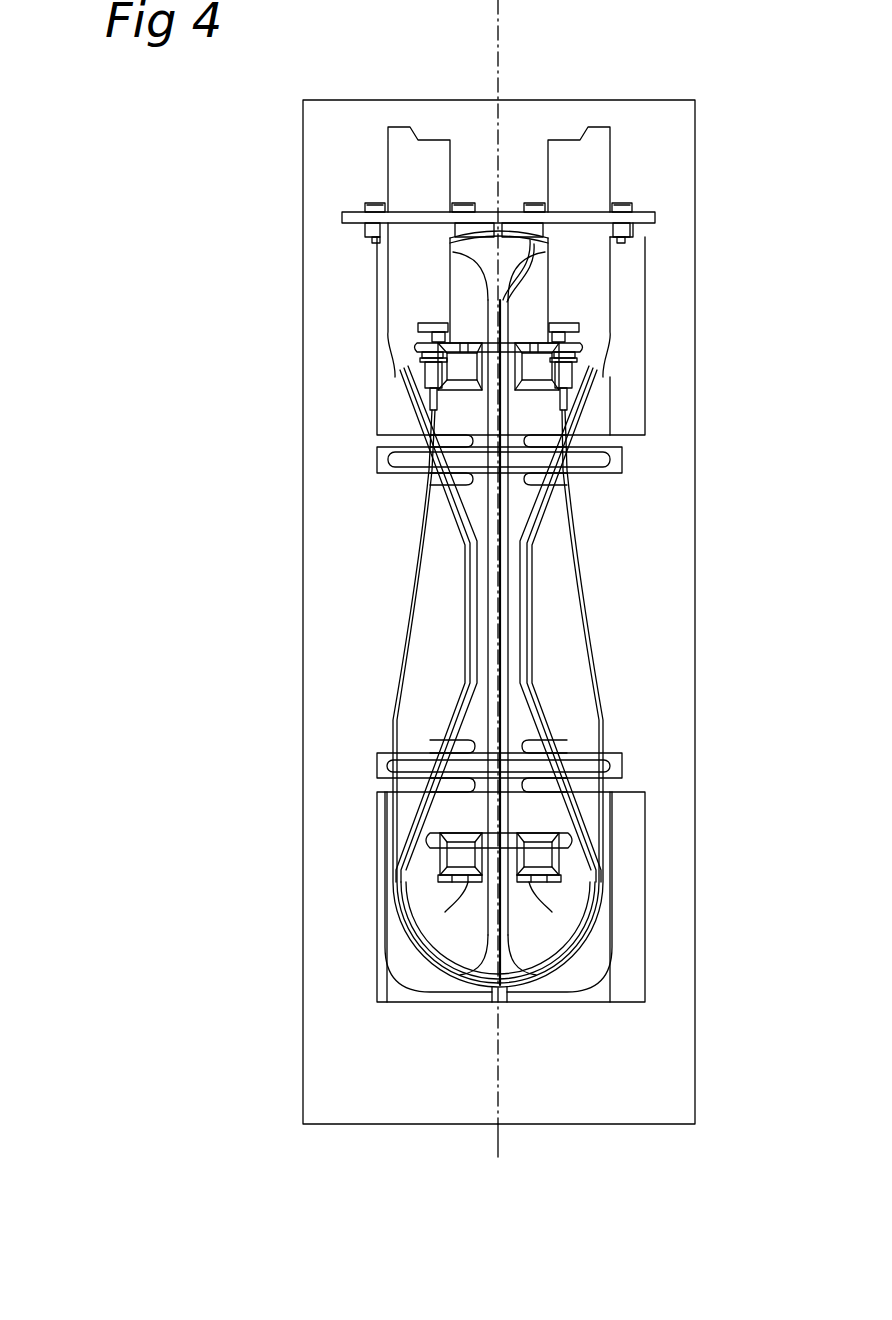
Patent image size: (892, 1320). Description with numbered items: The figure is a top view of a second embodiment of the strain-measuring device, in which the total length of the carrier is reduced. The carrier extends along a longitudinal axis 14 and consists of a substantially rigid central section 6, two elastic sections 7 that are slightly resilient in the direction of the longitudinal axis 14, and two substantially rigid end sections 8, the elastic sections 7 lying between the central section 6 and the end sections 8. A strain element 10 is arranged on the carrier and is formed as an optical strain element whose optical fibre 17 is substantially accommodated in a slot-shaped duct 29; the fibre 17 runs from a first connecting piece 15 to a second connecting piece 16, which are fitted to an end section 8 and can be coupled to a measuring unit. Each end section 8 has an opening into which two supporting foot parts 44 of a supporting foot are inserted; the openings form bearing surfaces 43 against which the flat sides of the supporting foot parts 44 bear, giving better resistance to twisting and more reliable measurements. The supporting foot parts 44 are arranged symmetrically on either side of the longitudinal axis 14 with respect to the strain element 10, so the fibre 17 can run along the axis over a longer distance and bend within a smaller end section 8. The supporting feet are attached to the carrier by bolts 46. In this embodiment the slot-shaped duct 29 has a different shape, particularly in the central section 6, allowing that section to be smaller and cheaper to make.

The central section 6 is at (513, 710).
The elastic section 7 is at (383, 462).
The end section 8 is at (625, 268).
The strain element 10 is at (497, 590).
The longitudinal axis 14 is at (498, 1140).
The first connecting piece 15 is at (598, 153).
The second connecting piece 16 is at (393, 153).
The optical fibre 17 is at (582, 538).
The slot-shaped duct 29 is at (625, 990).
The bearing surface 43 is at (467, 382).
The supporting foot part 44 is at (537, 367).
The bolt 46 is at (470, 343).